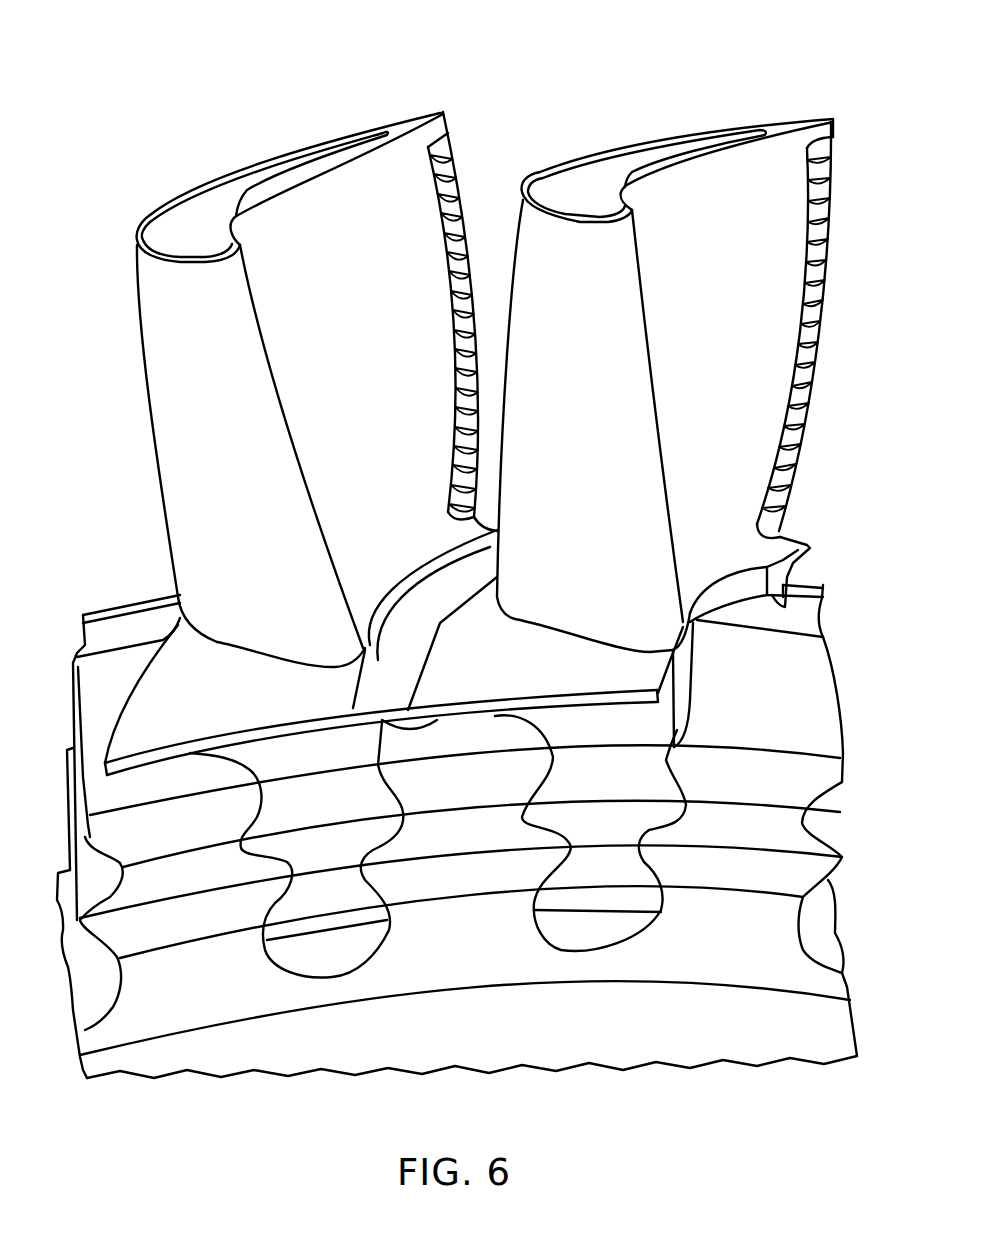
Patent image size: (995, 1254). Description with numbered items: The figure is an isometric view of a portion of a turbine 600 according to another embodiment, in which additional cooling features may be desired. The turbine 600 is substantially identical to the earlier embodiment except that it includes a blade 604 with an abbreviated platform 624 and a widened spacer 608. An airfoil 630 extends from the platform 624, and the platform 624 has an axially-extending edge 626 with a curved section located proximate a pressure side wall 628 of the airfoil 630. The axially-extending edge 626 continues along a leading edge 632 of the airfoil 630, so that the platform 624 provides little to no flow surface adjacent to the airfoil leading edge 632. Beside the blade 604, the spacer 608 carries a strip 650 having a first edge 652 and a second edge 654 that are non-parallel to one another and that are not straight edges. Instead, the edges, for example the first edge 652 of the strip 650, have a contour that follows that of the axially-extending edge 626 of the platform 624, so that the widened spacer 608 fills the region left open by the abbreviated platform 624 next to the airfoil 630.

The turbine 600 is at (535, 97).
The blade 604 is at (165, 389).
The spacer 608 is at (368, 653).
The platform 624 is at (203, 673).
The axially-extending edge 626 is at (353, 690).
The pressure side wall 628 is at (290, 290).
The airfoil 630 is at (357, 178).
The leading edge 632 is at (262, 407).
The strip 650 is at (427, 620).
The first edge 652 is at (402, 580).
The second edge 654 is at (430, 653).